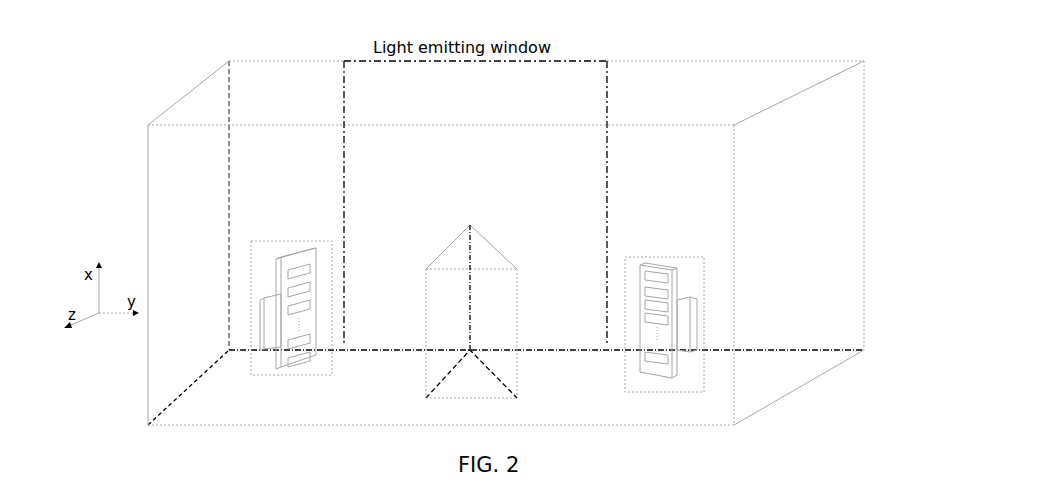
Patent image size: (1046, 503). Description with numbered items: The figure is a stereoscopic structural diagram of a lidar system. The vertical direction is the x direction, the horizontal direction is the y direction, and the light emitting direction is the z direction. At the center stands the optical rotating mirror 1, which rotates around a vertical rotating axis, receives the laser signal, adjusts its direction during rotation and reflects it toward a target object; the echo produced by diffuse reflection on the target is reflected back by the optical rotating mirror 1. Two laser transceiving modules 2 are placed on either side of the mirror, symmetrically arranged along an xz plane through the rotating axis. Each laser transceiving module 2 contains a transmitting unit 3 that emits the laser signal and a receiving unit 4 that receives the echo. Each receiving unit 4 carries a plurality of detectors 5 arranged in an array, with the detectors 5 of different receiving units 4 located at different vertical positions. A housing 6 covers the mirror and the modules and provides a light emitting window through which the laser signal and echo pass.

The optical rotating mirror 1 is at (485, 258).
The laser transceiving module 2 is at (291, 375).
The transmitting unit 3 is at (263, 306).
The receiving unit 4 is at (311, 252).
The detectors 5 is at (310, 262).
The housing 6 is at (745, 61).